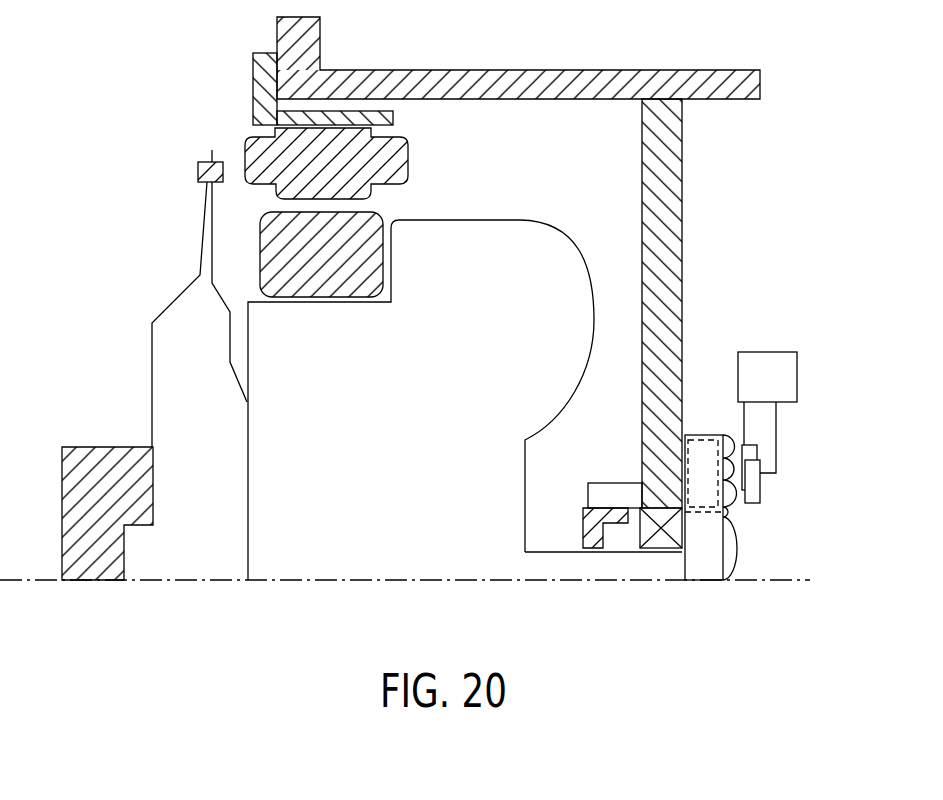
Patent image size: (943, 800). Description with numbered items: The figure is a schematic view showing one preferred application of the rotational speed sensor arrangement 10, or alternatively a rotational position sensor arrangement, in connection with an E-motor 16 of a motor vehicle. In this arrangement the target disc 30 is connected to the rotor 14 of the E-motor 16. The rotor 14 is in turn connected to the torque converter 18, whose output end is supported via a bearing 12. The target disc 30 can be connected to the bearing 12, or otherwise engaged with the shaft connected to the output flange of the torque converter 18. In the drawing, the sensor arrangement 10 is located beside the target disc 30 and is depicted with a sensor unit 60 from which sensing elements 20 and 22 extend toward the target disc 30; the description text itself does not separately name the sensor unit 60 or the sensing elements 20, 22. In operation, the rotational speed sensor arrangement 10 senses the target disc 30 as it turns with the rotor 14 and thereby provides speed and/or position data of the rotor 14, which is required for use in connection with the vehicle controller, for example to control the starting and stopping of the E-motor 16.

The rotational speed sensor arrangement 10 is at (817, 375).
The bearing 12 is at (640, 510).
The rotor 14 is at (342, 284).
The E-motor 16 is at (436, 185).
The torque converter 18 is at (525, 220).
The sensor element 20 is at (756, 455).
The sensor element 22 is at (758, 497).
The target disc 30 is at (692, 422).
The sensor electronics unit 60 is at (785, 382).